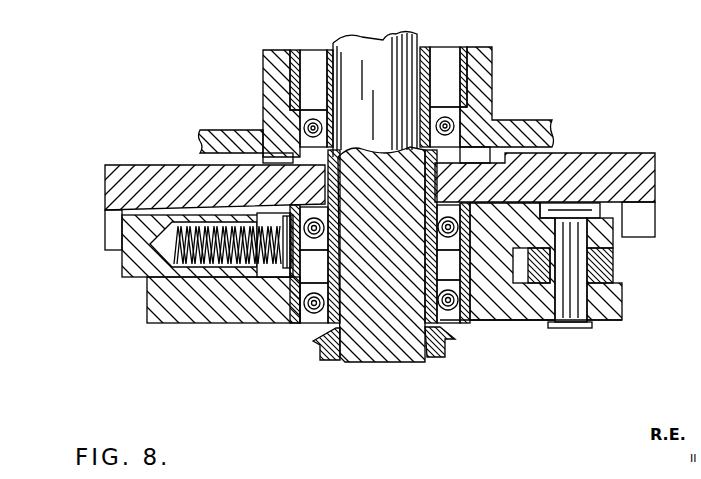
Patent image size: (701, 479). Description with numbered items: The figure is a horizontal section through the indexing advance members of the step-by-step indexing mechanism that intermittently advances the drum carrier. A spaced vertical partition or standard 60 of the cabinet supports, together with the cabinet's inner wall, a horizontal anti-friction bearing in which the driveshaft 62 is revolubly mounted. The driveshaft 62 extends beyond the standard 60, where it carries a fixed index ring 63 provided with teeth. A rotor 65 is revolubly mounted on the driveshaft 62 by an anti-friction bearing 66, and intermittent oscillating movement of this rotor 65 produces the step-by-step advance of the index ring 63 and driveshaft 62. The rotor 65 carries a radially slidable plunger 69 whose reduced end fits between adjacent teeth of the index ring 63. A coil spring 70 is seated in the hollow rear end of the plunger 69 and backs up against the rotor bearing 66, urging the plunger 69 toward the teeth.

The standard 60 is at (482, 93).
The driveshaft 62 is at (361, 48).
The index ring 63 is at (113, 180).
The rotor 65 is at (228, 305).
The anti-friction bearing 66 is at (312, 312).
The plunger 69 is at (137, 261).
The coil spring 70 is at (200, 266).